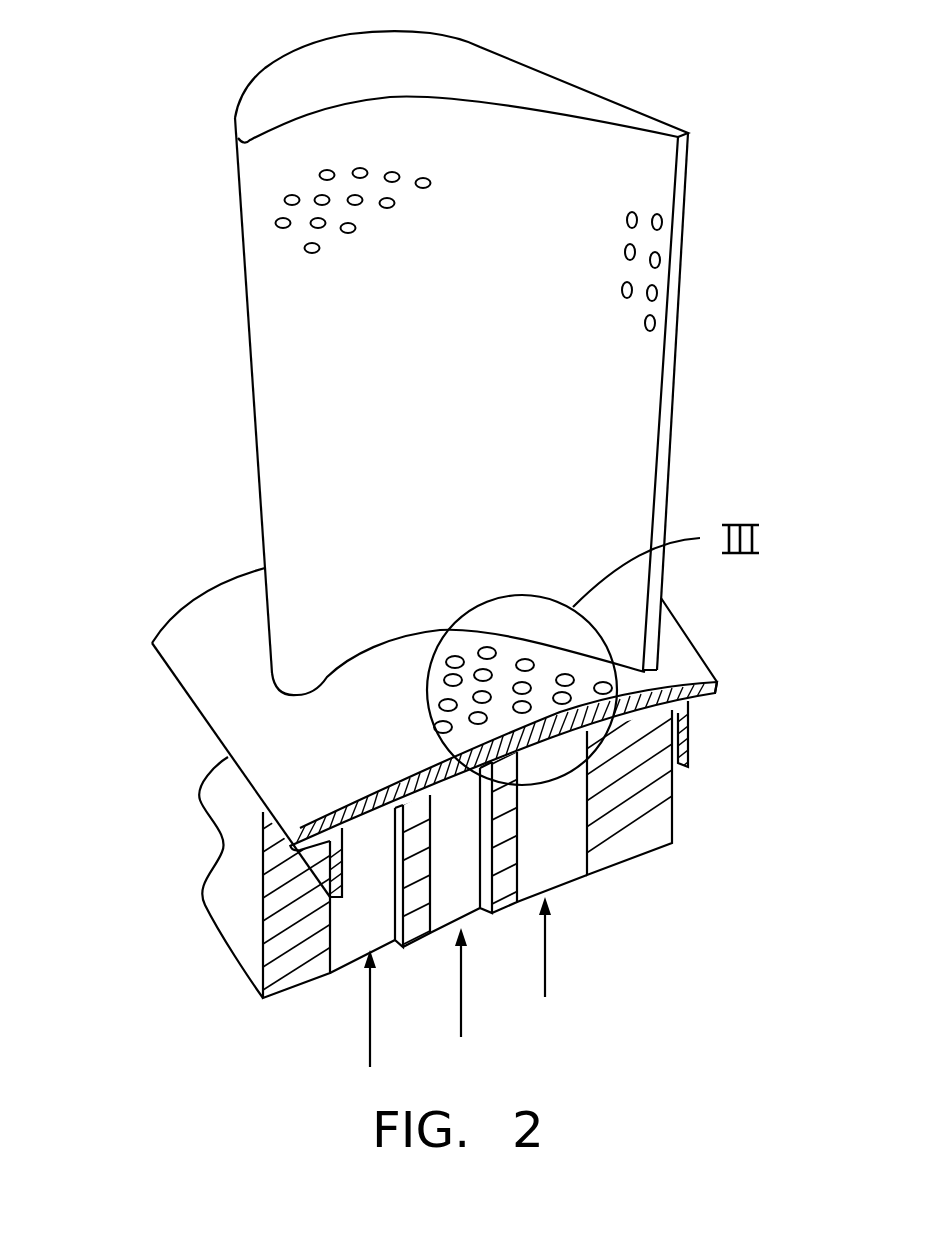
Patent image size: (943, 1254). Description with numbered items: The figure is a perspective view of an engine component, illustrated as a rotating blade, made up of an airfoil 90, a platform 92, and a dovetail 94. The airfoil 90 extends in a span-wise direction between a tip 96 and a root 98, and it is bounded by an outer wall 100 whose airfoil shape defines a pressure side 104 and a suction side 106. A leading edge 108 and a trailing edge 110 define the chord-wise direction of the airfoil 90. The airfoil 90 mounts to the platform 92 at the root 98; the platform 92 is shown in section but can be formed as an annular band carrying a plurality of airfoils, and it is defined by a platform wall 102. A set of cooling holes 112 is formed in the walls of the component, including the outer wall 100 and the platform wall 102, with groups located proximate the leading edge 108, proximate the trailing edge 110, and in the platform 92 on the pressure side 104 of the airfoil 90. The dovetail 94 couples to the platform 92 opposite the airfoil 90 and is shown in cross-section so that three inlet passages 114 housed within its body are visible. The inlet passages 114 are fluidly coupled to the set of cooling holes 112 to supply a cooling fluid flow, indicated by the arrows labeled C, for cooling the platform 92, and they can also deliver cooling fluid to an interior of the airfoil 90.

The airfoil 90 is at (222, 283).
The platform 92 is at (192, 648).
The dovetail 94 is at (237, 862).
The tip 96 is at (297, 80).
The root 98 is at (628, 662).
The outer wall 100 is at (583, 370).
The platform wall 102 is at (695, 672).
The pressure side 104 is at (387, 98).
The suction side 106 is at (472, 40).
The leading edge 108 is at (237, 150).
The trailing edge 110 is at (688, 163).
The set of cooling holes 112 is at (275, 224).
The inlet passages 114 is at (452, 900).